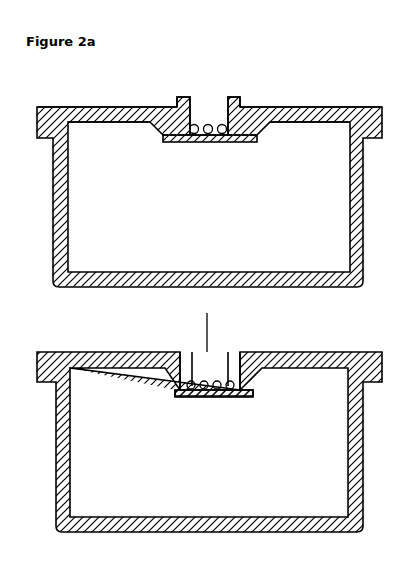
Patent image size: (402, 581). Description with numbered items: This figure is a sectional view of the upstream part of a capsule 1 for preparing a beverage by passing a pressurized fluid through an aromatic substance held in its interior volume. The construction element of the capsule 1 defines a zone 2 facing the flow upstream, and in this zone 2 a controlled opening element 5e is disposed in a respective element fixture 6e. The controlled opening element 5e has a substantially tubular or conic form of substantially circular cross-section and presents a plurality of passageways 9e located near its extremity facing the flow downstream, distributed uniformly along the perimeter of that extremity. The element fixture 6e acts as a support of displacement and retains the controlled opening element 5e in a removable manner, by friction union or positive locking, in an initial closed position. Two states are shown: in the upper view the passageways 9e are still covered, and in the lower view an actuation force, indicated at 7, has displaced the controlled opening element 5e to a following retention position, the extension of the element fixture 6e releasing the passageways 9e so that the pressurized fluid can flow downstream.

The capsule 1 is at (206, 185).
The zone of capsule facing the flow upstream 2 is at (209, 108).
The controlled opening element 5e is at (222, 93).
The passageways 9e is at (208, 122).
The element fixture 6e is at (223, 137).
The pin / rod 7 is at (217, 332).